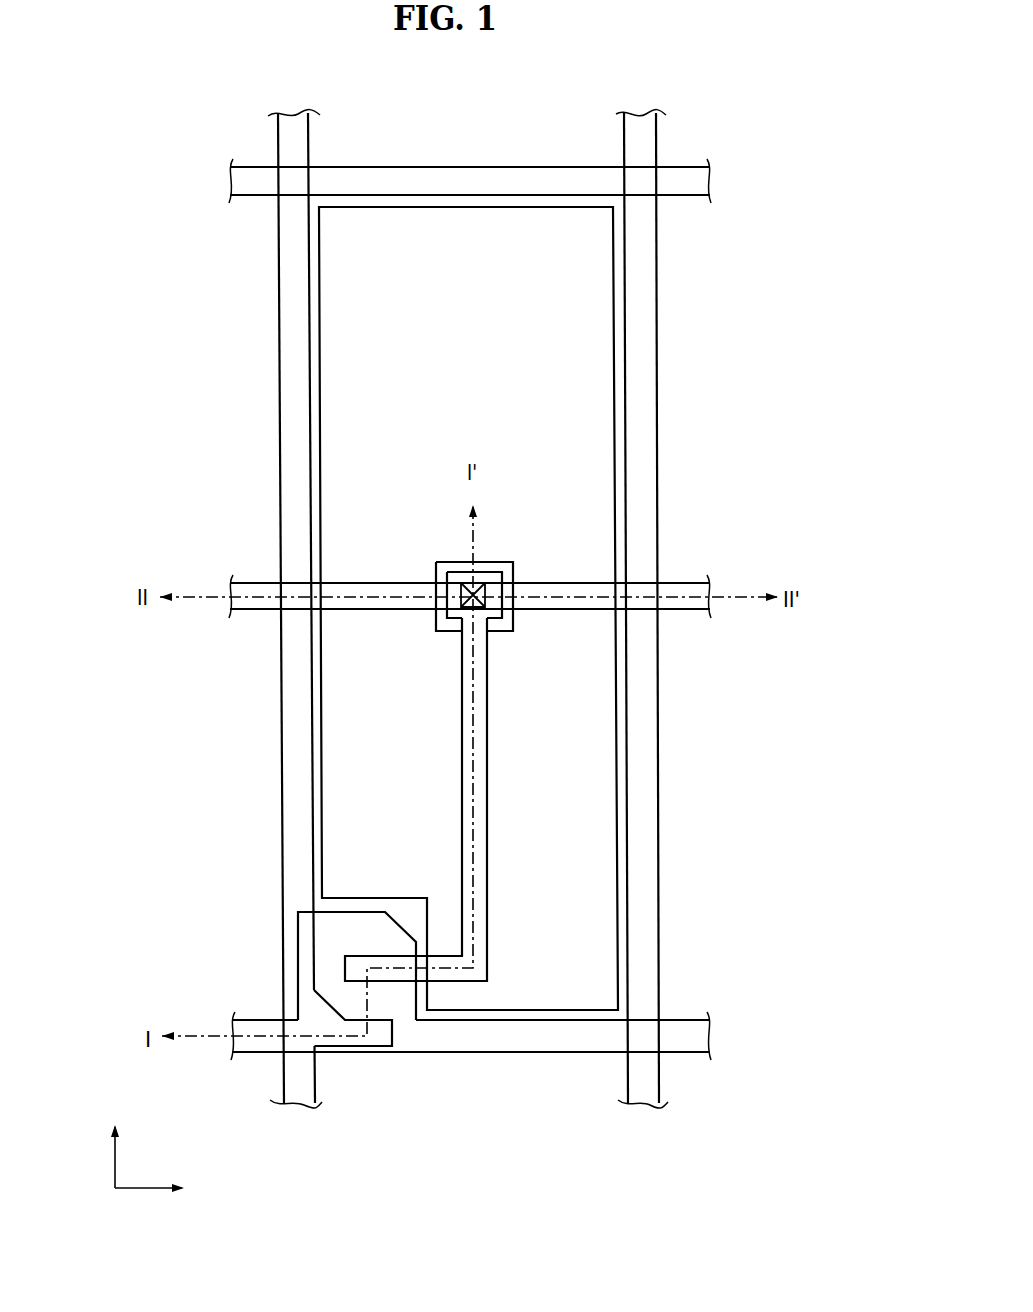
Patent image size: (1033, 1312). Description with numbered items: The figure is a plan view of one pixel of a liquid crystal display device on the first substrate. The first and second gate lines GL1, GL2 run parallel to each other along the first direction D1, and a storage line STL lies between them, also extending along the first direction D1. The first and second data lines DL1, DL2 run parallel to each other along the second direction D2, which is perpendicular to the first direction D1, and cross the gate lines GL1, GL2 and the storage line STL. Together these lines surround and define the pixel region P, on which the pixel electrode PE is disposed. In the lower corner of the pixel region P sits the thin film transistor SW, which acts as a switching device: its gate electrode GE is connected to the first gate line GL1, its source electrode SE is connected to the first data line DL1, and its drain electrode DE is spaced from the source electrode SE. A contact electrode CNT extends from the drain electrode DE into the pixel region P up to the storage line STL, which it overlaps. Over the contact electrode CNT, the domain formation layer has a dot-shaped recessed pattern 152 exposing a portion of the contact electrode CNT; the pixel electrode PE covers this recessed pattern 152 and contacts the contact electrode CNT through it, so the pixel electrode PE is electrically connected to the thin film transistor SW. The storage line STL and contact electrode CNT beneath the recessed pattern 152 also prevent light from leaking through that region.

The first data line DL1 is at (287, 923).
The second data line DL2 is at (652, 923).
The first gate line GL1 is at (597, 1046).
The second gate line GL2 is at (467, 177).
The storage line STL is at (253, 585).
The pixel region P is at (475, 290).
The pixel electrode PE is at (593, 783).
The contact electrode CNT is at (512, 617).
The recessed pattern 152 is at (480, 583).
The thin film transistor SW is at (392, 913).
The source electrode SE is at (378, 1025).
The gate electrode GE is at (403, 1005).
The drain electrode DE is at (443, 977).
The first direction D1 is at (162, 1190).
The second direction D2 is at (115, 1143).